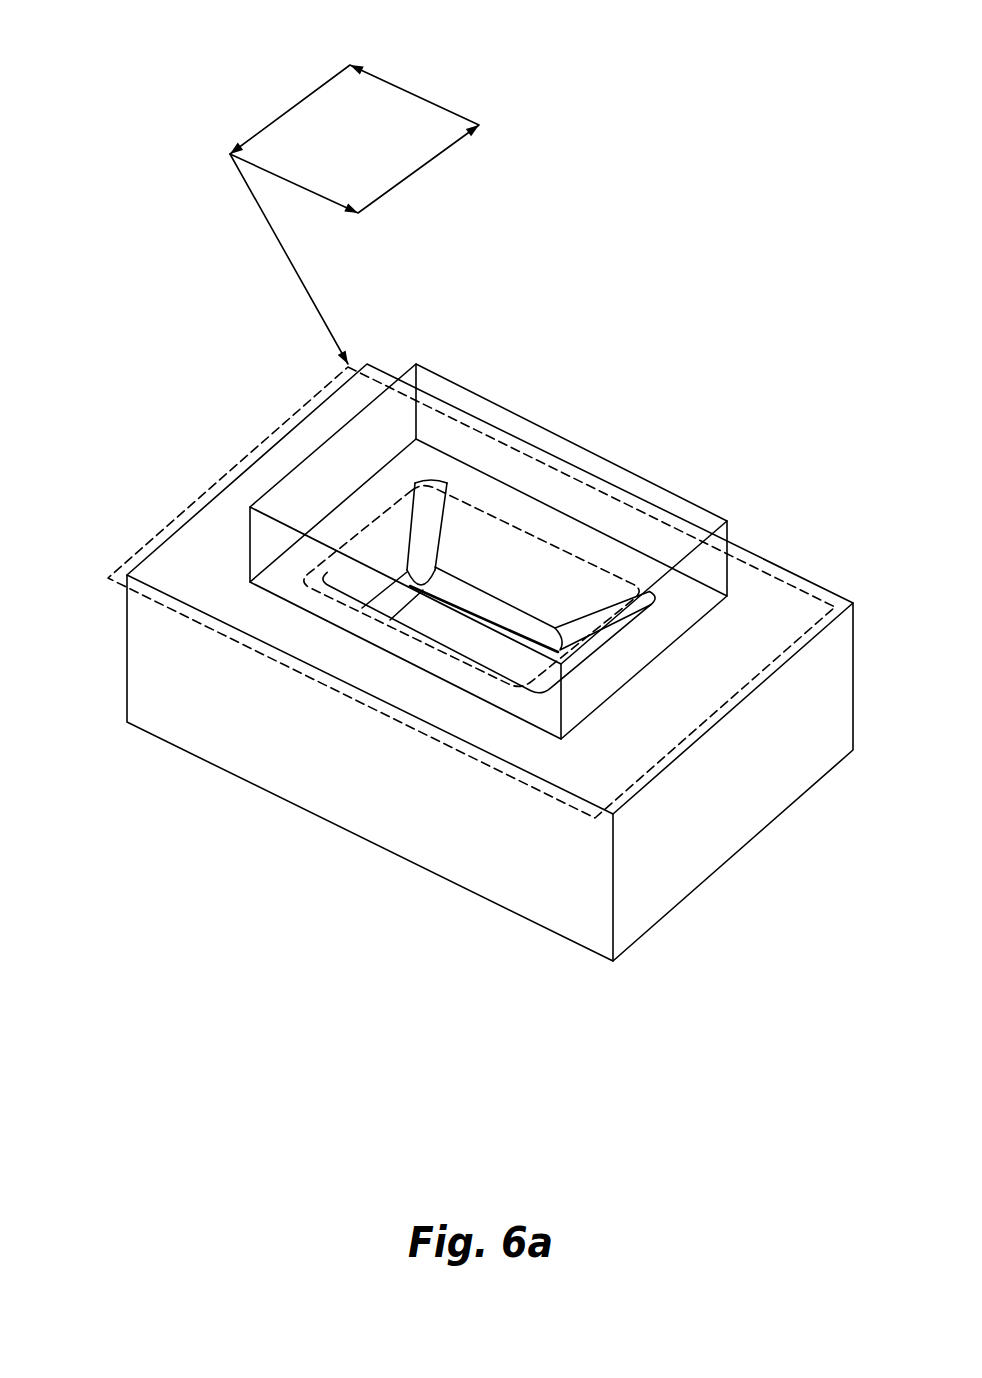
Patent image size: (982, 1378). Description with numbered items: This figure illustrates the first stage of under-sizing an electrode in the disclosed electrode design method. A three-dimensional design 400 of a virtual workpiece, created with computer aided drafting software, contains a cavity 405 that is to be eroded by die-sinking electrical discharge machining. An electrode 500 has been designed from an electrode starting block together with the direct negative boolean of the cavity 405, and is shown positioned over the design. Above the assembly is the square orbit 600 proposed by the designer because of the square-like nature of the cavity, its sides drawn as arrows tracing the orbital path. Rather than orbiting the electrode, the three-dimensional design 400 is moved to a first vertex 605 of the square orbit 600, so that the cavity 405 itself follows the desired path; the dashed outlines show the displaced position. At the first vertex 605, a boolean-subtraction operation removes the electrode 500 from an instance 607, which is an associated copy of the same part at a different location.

The three-dimensional design 400 is at (615, 488).
The cavity 405 is at (309, 574).
The electrode 500 is at (492, 401).
The square orbit 600 is at (407, 89).
The first vertex 605 is at (227, 154).
The instance 607 is at (461, 663).